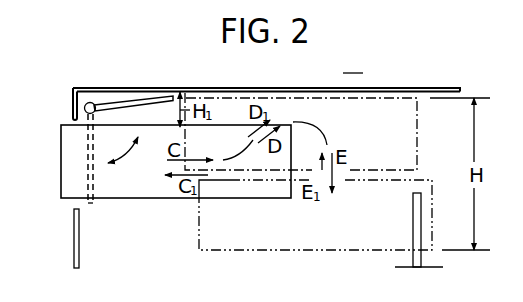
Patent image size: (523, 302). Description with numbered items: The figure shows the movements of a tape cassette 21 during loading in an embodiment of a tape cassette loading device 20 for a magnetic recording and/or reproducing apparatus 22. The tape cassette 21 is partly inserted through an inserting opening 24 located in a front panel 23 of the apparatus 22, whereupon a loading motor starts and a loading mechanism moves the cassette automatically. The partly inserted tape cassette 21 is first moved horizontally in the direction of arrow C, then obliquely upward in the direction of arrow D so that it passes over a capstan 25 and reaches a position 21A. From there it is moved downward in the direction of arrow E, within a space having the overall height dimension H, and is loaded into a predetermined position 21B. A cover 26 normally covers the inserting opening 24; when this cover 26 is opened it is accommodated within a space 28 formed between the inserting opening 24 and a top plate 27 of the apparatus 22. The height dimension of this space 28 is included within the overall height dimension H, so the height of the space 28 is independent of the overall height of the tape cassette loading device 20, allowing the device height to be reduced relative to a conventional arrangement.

The tape cassette loading device 20 is at (353, 63).
The tape cassette 21 is at (62, 145).
The position 21A is at (416, 115).
The predetermined position 21B is at (198, 240).
The magnetic recording and/or reproducing apparatus 22 is at (397, 85).
The front panel 23 is at (74, 242).
The inserting opening 24 is at (86, 203).
The capstan 25 is at (422, 231).
The cover 26 is at (122, 101).
The top plate 27 is at (297, 86).
The space 28 is at (150, 113).